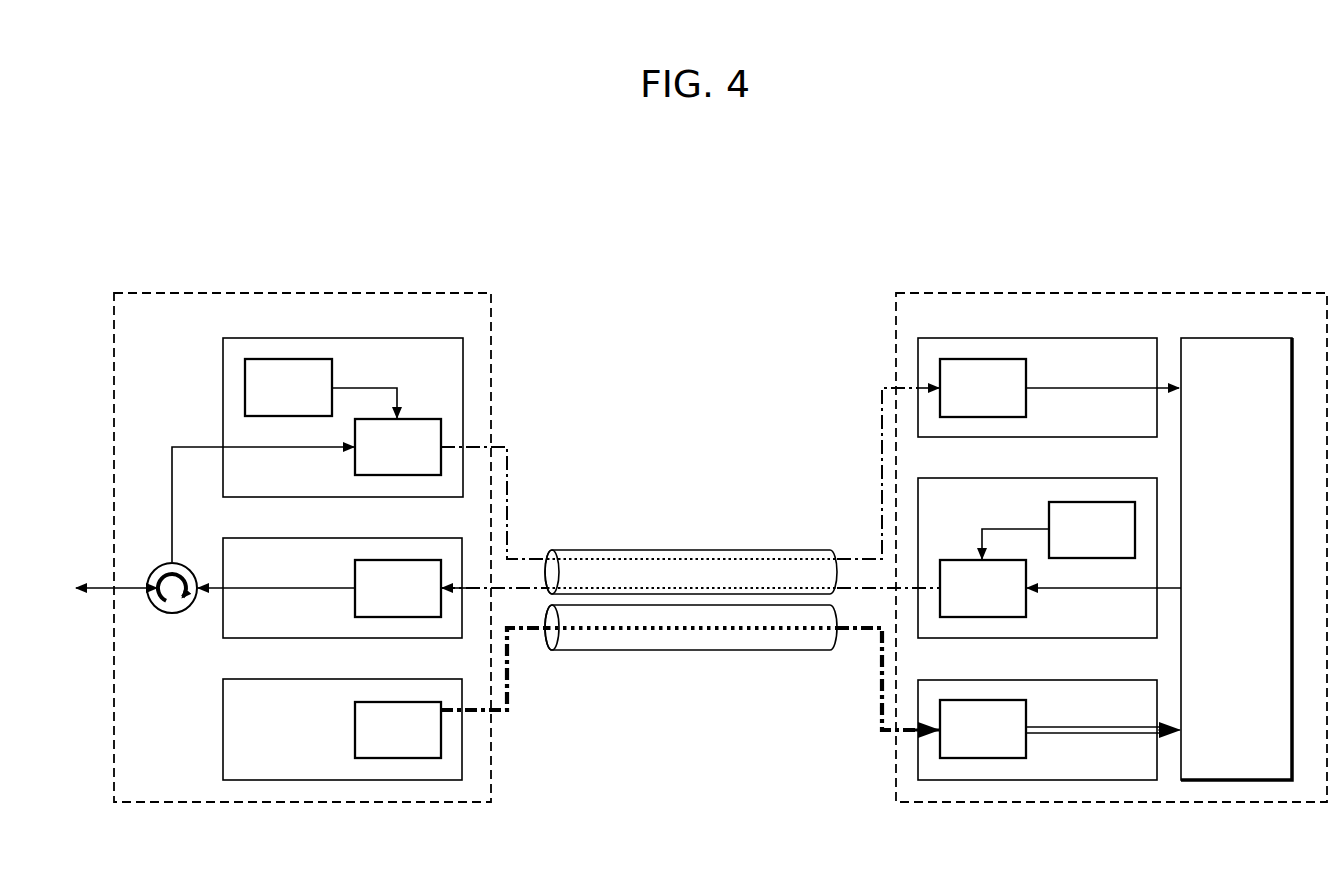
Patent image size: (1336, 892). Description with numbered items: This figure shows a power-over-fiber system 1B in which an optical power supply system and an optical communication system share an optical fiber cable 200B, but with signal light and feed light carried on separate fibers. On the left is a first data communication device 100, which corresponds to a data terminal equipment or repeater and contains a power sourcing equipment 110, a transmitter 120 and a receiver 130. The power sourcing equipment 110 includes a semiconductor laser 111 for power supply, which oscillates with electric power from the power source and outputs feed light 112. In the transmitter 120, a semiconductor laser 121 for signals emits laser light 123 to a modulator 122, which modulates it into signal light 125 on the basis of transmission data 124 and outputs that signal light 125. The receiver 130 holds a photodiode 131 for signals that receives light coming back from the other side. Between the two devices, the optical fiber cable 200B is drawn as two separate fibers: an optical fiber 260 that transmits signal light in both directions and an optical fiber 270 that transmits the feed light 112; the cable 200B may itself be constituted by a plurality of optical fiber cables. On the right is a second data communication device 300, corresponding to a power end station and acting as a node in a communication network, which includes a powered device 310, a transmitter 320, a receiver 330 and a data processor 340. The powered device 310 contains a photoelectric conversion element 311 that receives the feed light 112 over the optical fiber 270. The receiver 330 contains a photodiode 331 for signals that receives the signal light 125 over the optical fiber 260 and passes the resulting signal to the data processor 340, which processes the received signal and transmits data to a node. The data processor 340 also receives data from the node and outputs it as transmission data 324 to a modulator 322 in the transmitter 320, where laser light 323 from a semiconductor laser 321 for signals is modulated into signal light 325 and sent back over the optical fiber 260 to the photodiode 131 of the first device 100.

The power-over-fiber system 1B is at (853, 205).
The first data communication device 100 is at (337, 293).
The power sourcing equipment 110 is at (293, 679).
The semiconductor laser for power supply 111 is at (355, 722).
The feed light 112 is at (508, 695).
The transmitter 120 is at (293, 338).
The semiconductor laser for signals 121 is at (332, 370).
The modulator 122 is at (355, 463).
The laser light 123 is at (390, 388).
The transmission data 124 is at (266, 447).
The signal light 125 is at (508, 462).
The receiver 130 is at (293, 538).
The photodiode for signals 131 is at (355, 580).
The optical fiber cable 200B is at (698, 436).
The optical fiber 260 is at (693, 548).
The optical fiber 270 is at (690, 650).
The second data communication device 300 is at (1023, 293).
The powered device 310 is at (1093, 680).
The photoelectric conversion element 311 is at (1027, 718).
The transmitter 320 is at (1093, 478).
The semiconductor laser for signals 321 is at (1085, 557).
The modulator 322 is at (1027, 605).
The laser light 323 is at (1010, 528).
The transmission data 324 is at (1082, 588).
The signal light 325 is at (860, 585).
The receiver 330 is at (1093, 338).
The photodiode for signals 331 is at (1027, 375).
The data processor 340 is at (1242, 338).